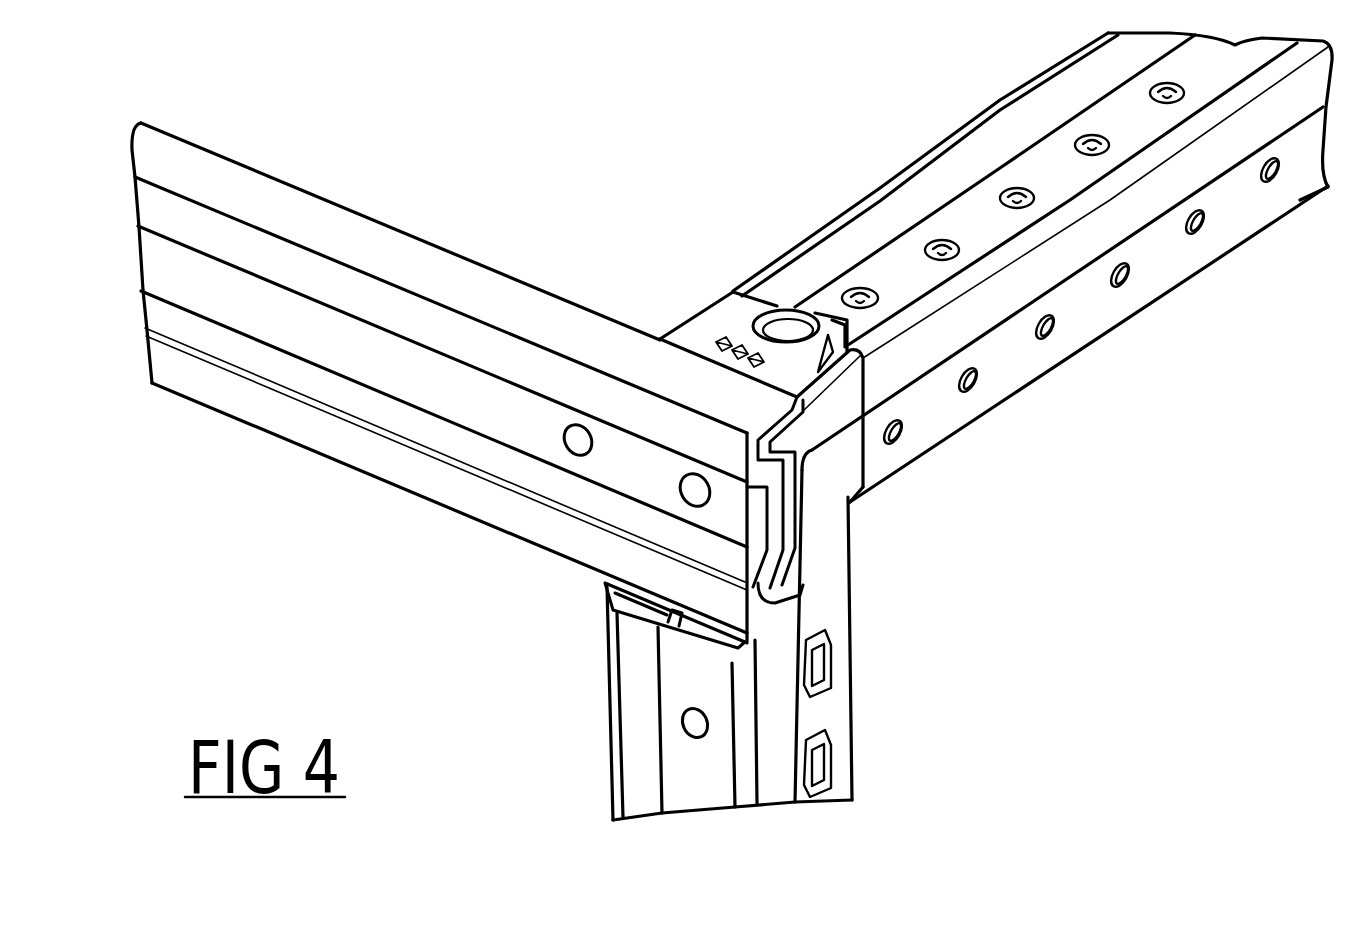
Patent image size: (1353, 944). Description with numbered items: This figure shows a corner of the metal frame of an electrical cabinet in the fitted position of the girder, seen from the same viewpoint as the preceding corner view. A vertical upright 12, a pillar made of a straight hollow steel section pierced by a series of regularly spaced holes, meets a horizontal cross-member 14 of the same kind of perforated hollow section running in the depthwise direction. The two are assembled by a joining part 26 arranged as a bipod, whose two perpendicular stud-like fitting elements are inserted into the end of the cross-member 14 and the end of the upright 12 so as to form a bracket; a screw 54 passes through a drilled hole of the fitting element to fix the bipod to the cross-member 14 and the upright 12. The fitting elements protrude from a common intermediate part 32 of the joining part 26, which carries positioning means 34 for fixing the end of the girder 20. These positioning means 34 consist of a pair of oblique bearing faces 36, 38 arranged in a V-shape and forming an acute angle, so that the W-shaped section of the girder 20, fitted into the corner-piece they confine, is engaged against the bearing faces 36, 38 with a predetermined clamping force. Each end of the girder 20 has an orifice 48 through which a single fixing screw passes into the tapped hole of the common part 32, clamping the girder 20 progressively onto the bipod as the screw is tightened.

The vertical upright 12 is at (814, 635).
The cross-member 14 is at (1093, 130).
The horizontal girder 20 is at (439, 383).
The joining part 26 is at (823, 523).
The common intermediate part 32 is at (758, 443).
The positioning means 34 is at (798, 602).
The bearing face 36 is at (793, 470).
The bearing face 38 is at (733, 665).
The orifice 48 is at (690, 498).
The screw 54 is at (787, 330).